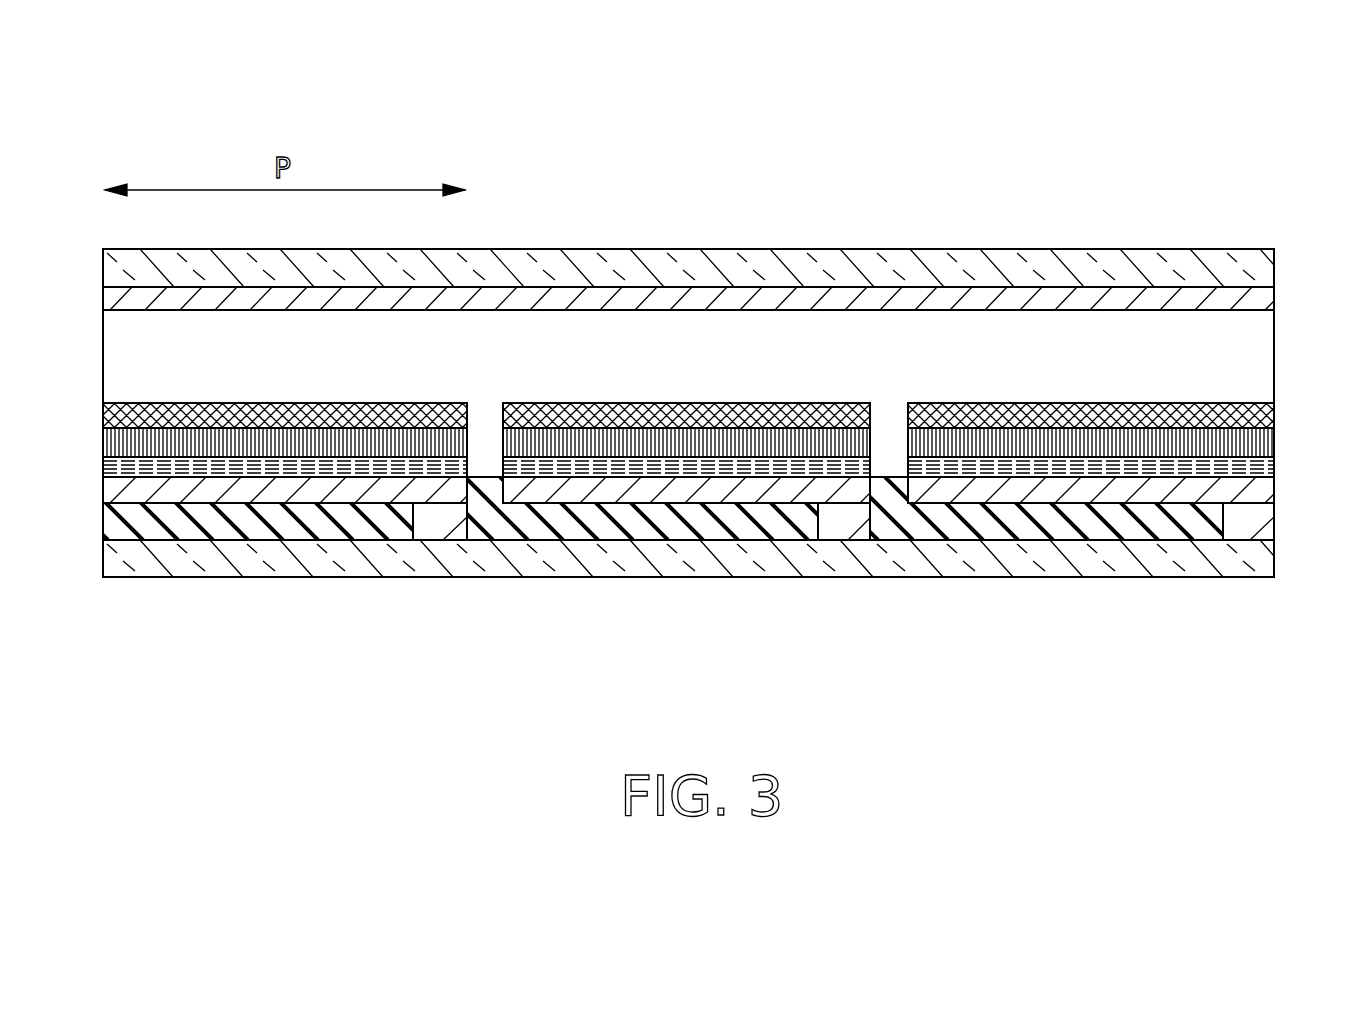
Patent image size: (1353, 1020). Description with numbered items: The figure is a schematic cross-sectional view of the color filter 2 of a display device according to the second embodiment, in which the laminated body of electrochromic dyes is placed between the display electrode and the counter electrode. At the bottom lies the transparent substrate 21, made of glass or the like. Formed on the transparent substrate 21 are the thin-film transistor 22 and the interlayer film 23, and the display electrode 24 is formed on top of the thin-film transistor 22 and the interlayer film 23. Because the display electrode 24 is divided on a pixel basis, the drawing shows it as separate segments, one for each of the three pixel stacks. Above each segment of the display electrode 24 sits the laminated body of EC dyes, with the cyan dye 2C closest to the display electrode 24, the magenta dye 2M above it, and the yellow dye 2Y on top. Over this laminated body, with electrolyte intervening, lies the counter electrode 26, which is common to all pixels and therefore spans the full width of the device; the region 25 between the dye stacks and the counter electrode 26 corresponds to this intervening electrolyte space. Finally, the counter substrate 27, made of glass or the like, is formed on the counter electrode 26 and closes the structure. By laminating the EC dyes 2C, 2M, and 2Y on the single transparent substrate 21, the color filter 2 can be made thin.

The color filter 2 is at (1352, 98).
The transparent substrate 21 is at (1255, 563).
The thin-film transistor 22 is at (836, 525).
The interlayer film 23 is at (1072, 533).
The display electrode 24 is at (302, 497).
The gap 25 is at (115, 355).
The counter electrode 26 is at (1255, 296).
The counter substrate 27 is at (1255, 272).
The EC dye 2Y is at (1258, 412).
The EC dye 2M is at (1263, 440).
The EC dye 2C is at (1260, 463).